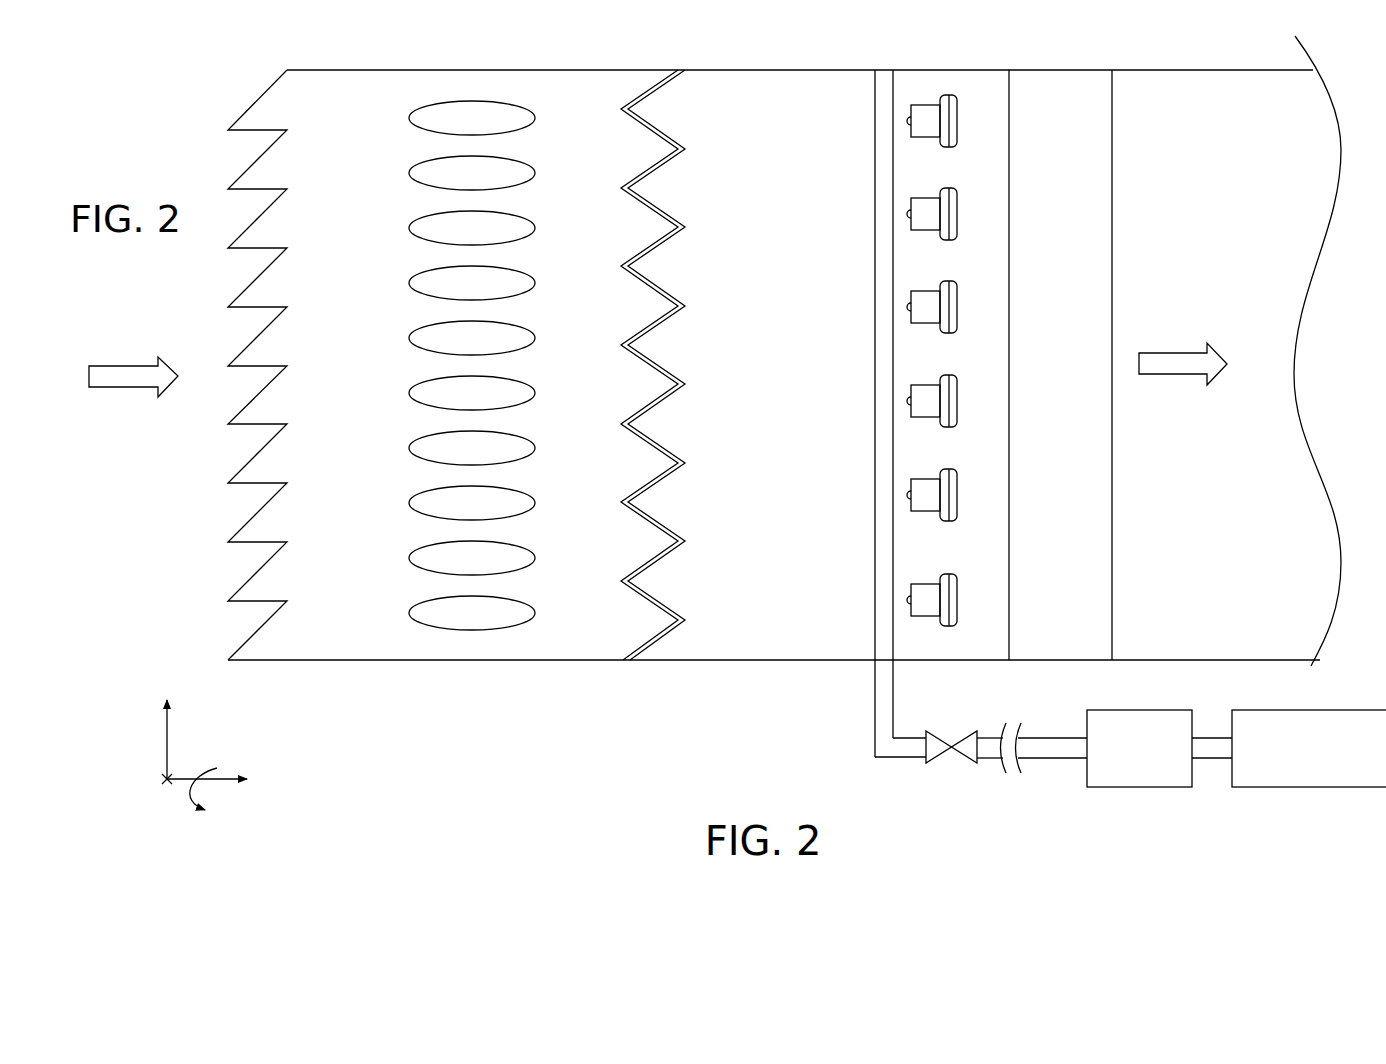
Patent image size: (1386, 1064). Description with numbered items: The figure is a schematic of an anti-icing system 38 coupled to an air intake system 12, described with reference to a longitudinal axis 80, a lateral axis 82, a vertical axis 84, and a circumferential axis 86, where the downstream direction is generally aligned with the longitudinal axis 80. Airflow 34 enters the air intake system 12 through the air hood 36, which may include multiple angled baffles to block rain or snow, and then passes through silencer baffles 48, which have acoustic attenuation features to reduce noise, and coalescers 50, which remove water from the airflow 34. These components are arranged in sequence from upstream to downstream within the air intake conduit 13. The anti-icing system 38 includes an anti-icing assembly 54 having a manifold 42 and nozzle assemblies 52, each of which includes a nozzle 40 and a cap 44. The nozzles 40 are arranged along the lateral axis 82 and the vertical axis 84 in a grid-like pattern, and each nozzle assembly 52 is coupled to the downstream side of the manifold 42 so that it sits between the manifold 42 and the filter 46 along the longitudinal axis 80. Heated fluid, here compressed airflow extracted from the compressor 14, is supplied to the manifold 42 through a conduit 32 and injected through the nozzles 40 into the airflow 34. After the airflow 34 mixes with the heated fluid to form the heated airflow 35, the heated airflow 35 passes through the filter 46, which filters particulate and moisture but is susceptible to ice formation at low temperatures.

The air intake system 12 is at (1075, 384).
The air intake conduit 13 is at (388, 70).
The compressor 14 is at (1305, 787).
The heated fluid supply conduit 32 is at (912, 758).
The airflow 34 is at (122, 366).
The heated airflow 35 is at (1175, 353).
The air hood 36 is at (238, 108).
The anti-icing system 38 is at (418, 338).
The nozzle 40 is at (920, 318).
The manifold 42 is at (870, 530).
The cap 44 is at (957, 320).
The filter 46 is at (1078, 70).
The silencer baffles 48 is at (470, 98).
The coalescers 50 is at (633, 97).
The nozzle assemblies 52 is at (946, 360).
The anti-icing assembly 54 is at (866, 62).
The longitudinal axis 80 is at (222, 786).
The lateral axis 82 is at (162, 779).
The vertical axis 84 is at (166, 742).
The circumferential axis 86 is at (208, 757).